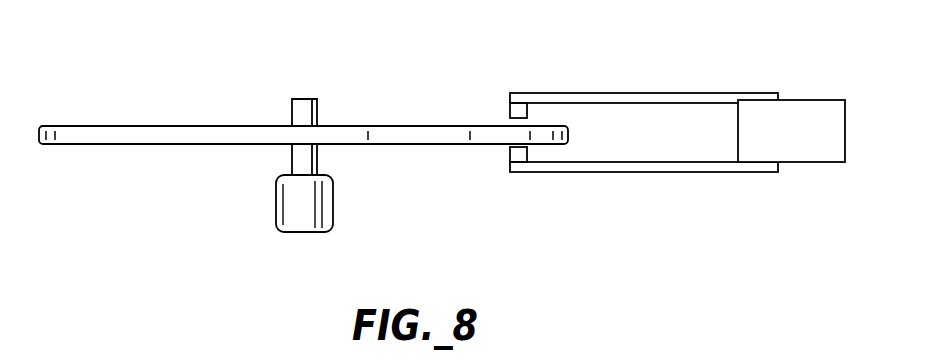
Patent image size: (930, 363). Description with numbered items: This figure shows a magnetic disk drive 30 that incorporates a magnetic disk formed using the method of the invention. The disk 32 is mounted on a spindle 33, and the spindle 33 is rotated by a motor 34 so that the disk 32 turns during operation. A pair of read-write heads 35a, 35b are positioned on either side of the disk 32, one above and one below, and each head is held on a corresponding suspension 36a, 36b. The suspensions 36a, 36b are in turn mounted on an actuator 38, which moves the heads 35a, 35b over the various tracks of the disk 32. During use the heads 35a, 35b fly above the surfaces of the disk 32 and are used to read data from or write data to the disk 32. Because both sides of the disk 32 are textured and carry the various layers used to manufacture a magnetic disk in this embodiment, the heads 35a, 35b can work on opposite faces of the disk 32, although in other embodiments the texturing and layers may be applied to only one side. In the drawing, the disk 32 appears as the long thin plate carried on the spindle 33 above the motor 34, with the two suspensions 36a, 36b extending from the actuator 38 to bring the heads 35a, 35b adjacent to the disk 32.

The disk drive 30 is at (182, 39).
The disk 32 is at (68, 146).
The spindle 33 is at (299, 98).
The motor 34 is at (276, 198).
The read-write head 35a is at (510, 110).
The read-write head 35b is at (510, 152).
The suspension 36a is at (584, 93).
The suspension 36b is at (584, 172).
The actuator 38 is at (798, 100).